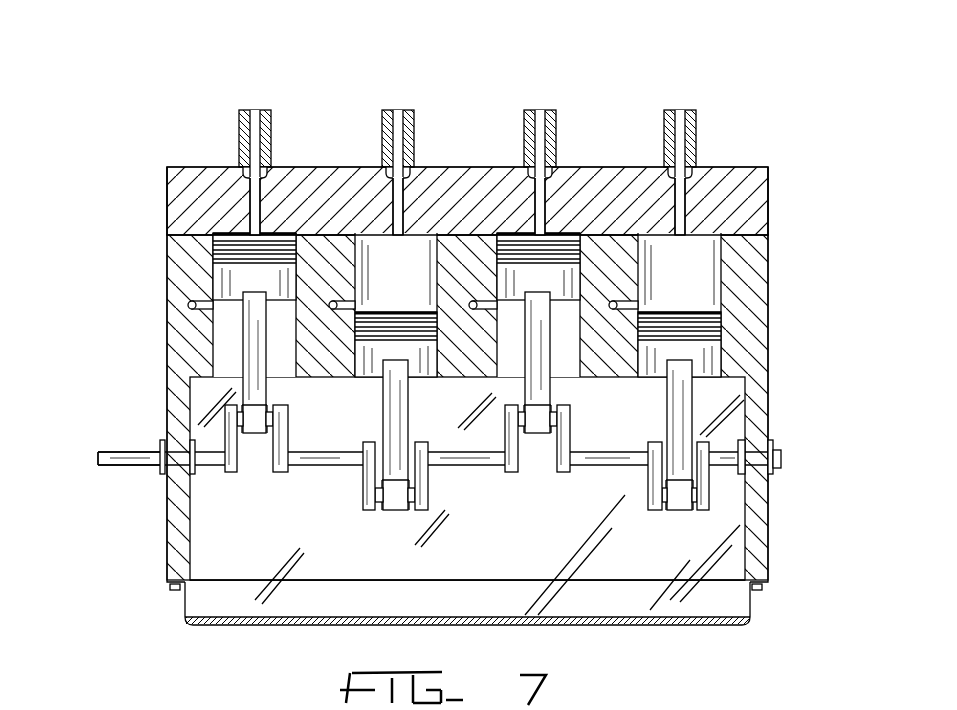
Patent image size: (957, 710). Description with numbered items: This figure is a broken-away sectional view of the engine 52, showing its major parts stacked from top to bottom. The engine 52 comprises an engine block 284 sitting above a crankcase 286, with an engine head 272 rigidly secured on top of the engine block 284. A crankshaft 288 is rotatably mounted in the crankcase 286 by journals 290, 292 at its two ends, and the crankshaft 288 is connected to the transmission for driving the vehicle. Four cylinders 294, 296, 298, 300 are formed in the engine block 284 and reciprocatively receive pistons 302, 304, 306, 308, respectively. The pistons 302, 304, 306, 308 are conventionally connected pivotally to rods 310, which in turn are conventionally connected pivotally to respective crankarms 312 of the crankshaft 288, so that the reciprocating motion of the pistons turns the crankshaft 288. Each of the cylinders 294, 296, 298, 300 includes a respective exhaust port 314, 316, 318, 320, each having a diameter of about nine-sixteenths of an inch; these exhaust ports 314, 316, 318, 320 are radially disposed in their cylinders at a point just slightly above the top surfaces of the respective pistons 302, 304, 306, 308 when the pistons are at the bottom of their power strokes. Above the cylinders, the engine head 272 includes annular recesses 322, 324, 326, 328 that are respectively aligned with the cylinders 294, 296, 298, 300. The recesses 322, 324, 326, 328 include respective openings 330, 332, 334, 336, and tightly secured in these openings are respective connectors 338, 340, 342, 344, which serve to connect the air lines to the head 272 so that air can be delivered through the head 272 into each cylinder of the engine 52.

The engine 52 is at (118, 128).
The engine head 272 is at (187, 200).
The engine block 284 is at (177, 387).
The crankcase 286 is at (510, 569).
The crankshaft 288 is at (330, 462).
The journal 290 is at (162, 466).
The journal 292 is at (770, 447).
The cylinder 294 is at (218, 336).
The cylinder 296 is at (360, 275).
The cylinder 298 is at (500, 350).
The cylinder 300 is at (645, 280).
The piston 302 is at (228, 282).
The piston 304 is at (375, 350).
The piston 306 is at (505, 283).
The piston 308 is at (660, 352).
The rod 310 is at (400, 392).
The crankarm 312 is at (232, 473).
The exhaust port 314 is at (188, 305).
The exhaust port 316 is at (330, 306).
The exhaust port 318 is at (470, 307).
The exhaust port 320 is at (611, 307).
The annular recess 322 is at (275, 237).
The annular recess 324 is at (415, 237).
The annular recess 326 is at (560, 237).
The annular recess 328 is at (700, 240).
The opening 330 is at (258, 207).
The opening 332 is at (392, 190).
The opening 334 is at (536, 200).
The opening 336 is at (677, 205).
The connector 338 is at (243, 132).
The connector 340 is at (383, 132).
The connector 342 is at (525, 132).
The connector 344 is at (667, 132).